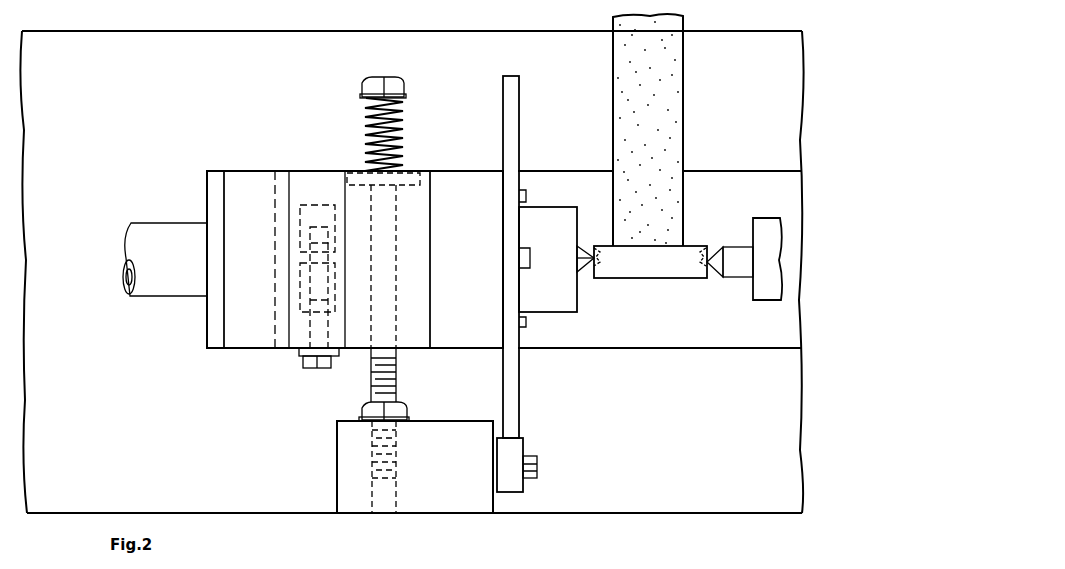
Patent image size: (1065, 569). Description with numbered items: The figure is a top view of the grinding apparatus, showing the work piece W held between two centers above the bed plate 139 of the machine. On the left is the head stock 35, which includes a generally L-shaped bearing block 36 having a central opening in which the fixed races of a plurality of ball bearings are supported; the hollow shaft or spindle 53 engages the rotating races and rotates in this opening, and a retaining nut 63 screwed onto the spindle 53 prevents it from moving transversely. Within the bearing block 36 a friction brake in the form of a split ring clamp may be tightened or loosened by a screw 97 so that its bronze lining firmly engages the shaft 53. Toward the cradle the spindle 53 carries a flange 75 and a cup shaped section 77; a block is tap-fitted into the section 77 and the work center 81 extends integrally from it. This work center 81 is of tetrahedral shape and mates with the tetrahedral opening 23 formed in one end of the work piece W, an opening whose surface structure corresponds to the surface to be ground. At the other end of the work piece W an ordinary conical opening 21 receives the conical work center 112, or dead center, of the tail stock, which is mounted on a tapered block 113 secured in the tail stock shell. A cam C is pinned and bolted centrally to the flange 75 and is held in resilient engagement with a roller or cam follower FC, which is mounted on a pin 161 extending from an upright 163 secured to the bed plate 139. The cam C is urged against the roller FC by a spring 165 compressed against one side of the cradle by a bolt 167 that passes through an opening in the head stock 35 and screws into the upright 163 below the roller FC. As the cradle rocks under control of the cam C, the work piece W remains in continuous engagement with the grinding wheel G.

The bed plate 139 is at (192, 442).
The head stock 35 is at (328, 161).
The retaining nut 63 is at (215, 180).
The flange 75 is at (479, 178).
The bearing block 36 is at (415, 345).
The spindle 53 is at (180, 232).
The screw 97 is at (306, 368).
The bolt 167 is at (397, 86).
The spring 165 is at (400, 113).
The upright 163 is at (343, 467).
The cam C is at (505, 82).
The cam follower FC is at (515, 452).
The pin 161 is at (537, 468).
The cup shaped section 77 is at (553, 216).
The work center 81 is at (582, 258).
The tetrahedral opening 23 is at (597, 246).
The work piece W is at (660, 276).
The conical opening 21 is at (708, 242).
The work center 112 is at (716, 250).
The tapered block 113 is at (758, 224).
The wheel G is at (678, 55).